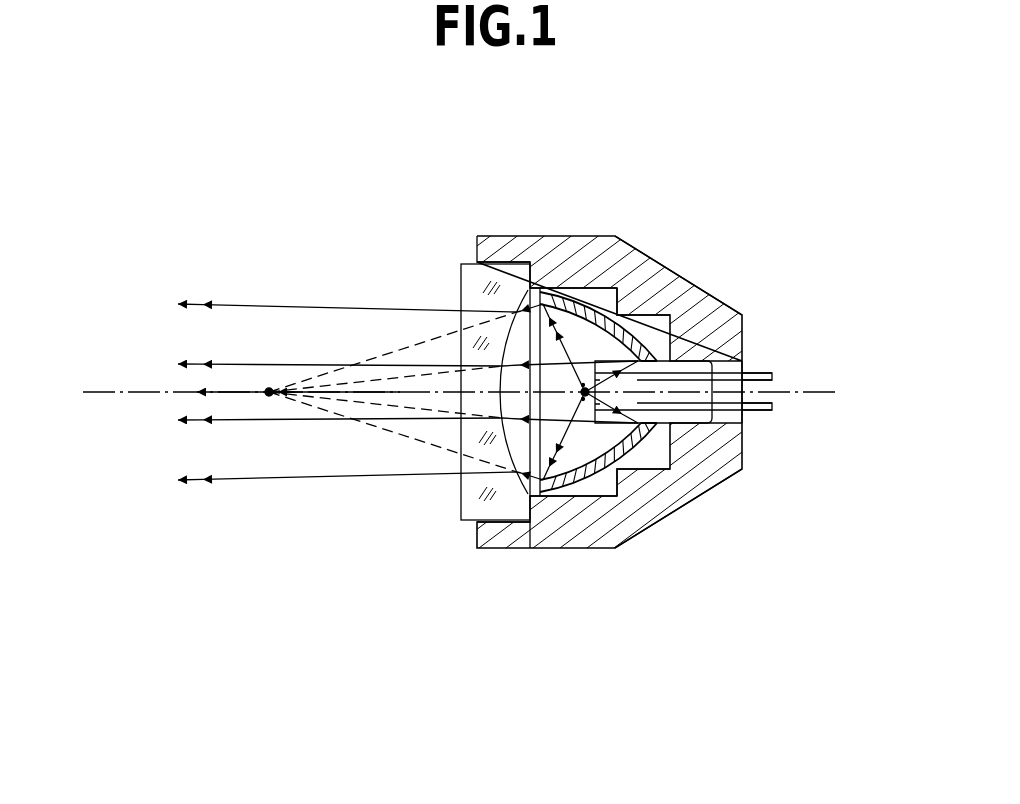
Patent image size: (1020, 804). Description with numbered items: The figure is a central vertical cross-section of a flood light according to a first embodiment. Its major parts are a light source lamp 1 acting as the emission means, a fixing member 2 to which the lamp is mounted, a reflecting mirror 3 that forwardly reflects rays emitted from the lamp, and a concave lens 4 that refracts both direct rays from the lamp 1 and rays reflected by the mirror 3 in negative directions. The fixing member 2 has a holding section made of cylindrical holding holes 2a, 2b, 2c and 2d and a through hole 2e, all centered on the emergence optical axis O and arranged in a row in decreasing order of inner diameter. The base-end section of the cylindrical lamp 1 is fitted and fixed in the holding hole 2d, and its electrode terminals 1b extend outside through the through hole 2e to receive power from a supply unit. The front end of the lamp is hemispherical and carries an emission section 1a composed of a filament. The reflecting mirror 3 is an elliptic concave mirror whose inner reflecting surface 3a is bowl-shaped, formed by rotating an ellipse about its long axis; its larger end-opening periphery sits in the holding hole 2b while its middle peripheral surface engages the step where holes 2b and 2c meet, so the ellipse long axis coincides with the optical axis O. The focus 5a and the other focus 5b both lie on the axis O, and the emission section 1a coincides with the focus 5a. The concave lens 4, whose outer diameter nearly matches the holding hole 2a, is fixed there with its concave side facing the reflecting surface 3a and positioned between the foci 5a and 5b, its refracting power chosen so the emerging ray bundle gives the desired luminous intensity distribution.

The light source lamp 1 is at (700, 360).
The emission section 1a is at (587, 403).
The electrode terminals 1b is at (772, 382).
The fixing member 2 is at (643, 277).
The holding hole 2a is at (493, 237).
The holding hole 2b is at (591, 288).
The holding hole 2c is at (657, 314).
The holding hole 2d is at (715, 316).
The through hole 2e is at (743, 362).
The reflecting mirror 3 is at (606, 288).
The reflecting surface 3a is at (558, 320).
The concave lens 4 is at (473, 290).
The focus 5a is at (583, 400).
The focus 5b is at (269, 398).
The emergence optical axis O is at (104, 392).